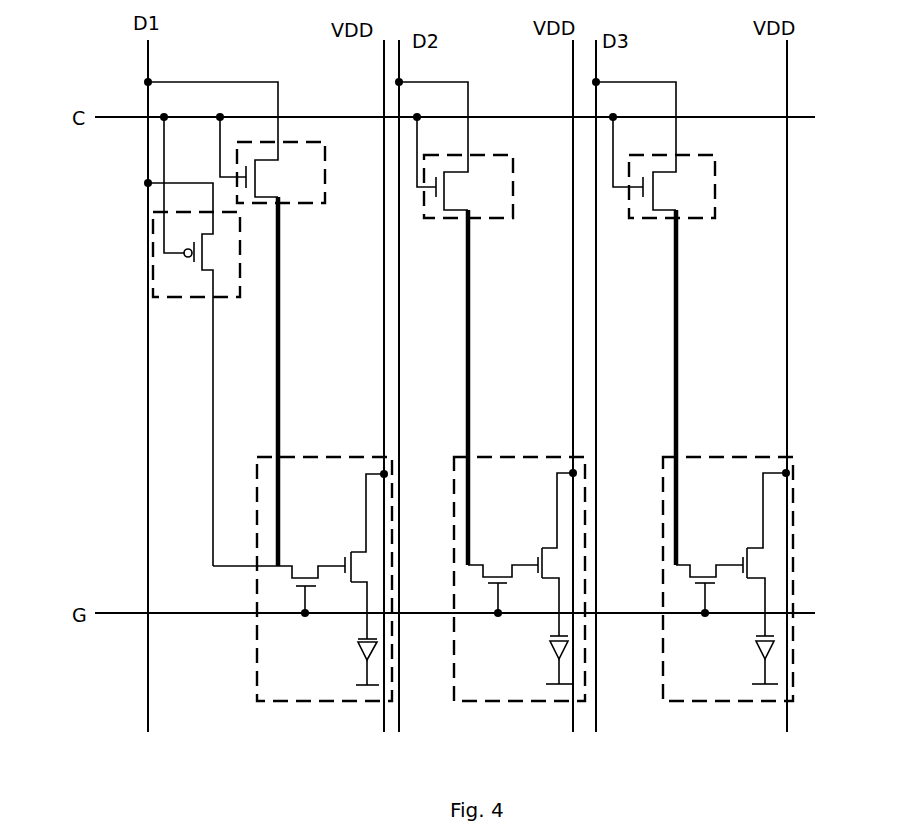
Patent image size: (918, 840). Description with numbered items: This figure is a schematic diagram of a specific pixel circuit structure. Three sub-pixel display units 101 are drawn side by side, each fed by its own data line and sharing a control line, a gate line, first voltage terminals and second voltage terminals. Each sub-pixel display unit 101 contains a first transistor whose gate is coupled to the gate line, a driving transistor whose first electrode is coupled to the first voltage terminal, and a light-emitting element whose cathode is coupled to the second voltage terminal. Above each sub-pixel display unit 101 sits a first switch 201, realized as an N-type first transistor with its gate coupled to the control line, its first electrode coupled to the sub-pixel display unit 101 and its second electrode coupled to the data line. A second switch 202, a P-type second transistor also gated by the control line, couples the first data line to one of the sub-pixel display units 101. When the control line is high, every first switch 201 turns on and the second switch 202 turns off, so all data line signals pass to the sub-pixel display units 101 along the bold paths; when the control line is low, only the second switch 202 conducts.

The first switch 201 is at (287, 140).
The second switch 202 is at (152, 247).
The sub-pixel display unit 101 is at (270, 703).